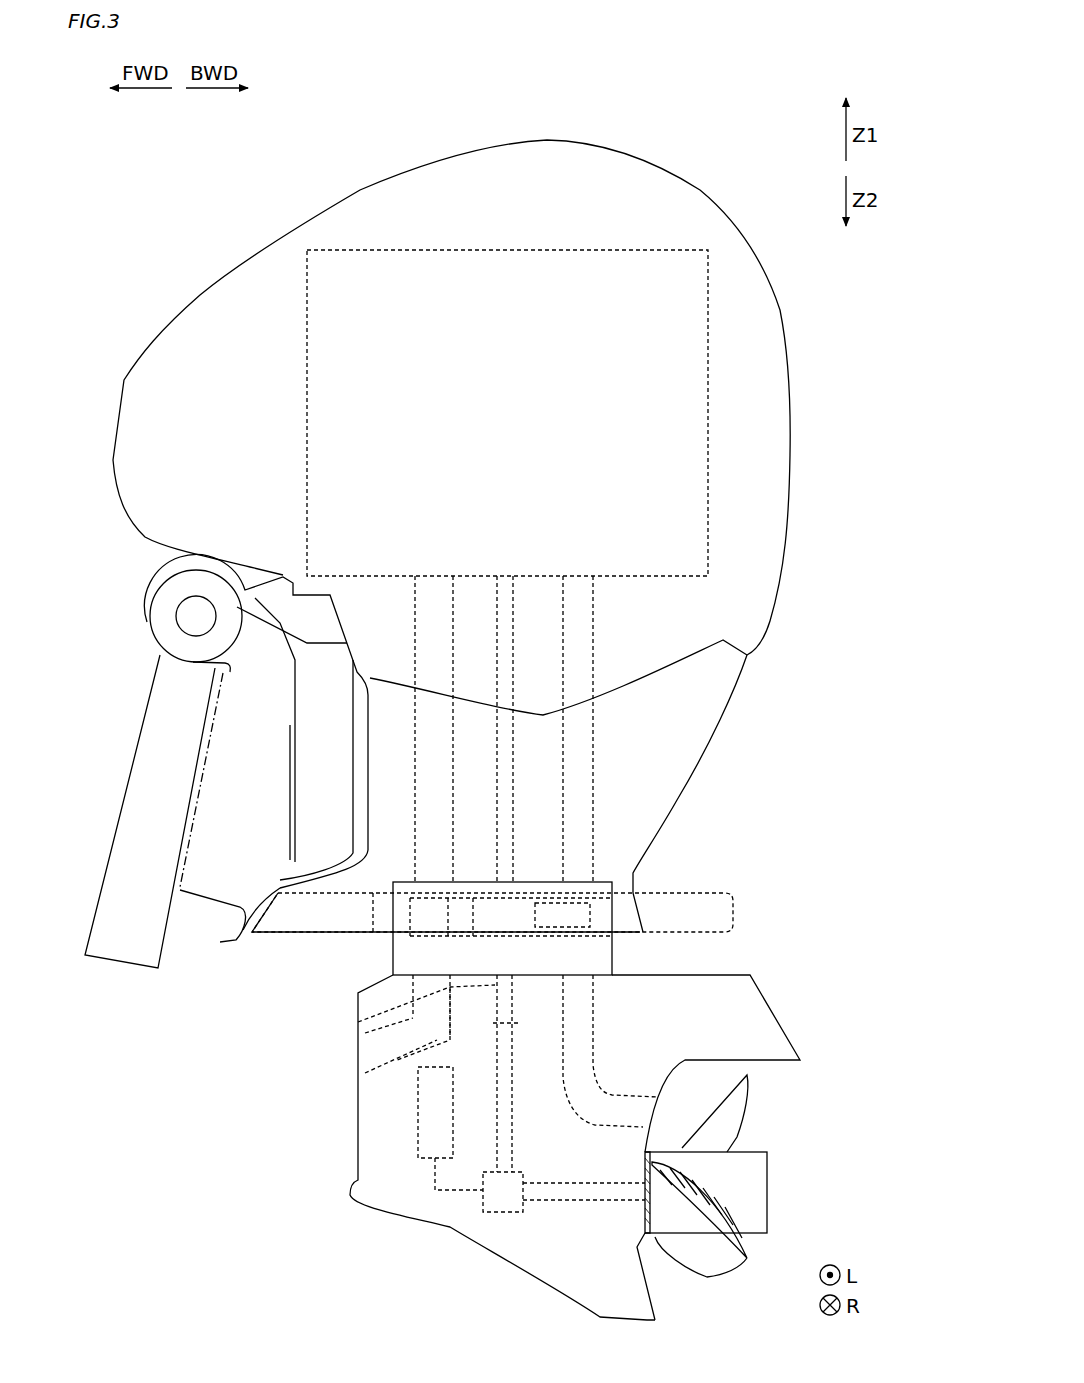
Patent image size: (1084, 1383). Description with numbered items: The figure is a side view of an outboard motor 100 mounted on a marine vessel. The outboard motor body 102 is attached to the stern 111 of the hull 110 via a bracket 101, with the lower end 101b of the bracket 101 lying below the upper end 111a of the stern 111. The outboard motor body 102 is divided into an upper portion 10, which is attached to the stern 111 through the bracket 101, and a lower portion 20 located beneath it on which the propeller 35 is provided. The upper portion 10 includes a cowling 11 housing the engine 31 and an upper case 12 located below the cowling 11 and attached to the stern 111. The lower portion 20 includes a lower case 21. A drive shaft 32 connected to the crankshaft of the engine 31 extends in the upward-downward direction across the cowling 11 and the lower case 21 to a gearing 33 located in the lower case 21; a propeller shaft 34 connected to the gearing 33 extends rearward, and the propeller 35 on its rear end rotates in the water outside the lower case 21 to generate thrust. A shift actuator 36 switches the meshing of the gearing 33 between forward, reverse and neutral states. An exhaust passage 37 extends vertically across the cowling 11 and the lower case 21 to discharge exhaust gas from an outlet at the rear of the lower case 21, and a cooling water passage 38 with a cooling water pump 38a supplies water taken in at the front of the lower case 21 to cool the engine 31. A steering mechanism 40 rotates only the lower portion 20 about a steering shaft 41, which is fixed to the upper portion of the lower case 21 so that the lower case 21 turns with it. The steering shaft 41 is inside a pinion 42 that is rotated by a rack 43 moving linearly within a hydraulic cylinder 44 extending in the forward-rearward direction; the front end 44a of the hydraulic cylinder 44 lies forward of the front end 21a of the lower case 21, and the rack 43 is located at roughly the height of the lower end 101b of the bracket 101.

The outboard motor 100 is at (236, 186).
The upper portion 10 is at (866, 378).
The cowling 11 is at (812, 395).
The upper case 12 is at (735, 728).
The engine 31 is at (307, 285).
The drive shaft 32 is at (513, 802).
The hull 110 is at (132, 694).
The bracket 101 is at (138, 603).
The lower end of the bracket 101b is at (240, 917).
The stern 111 is at (135, 673).
The upper end of the stern 111a is at (150, 641).
The outboard motor body 102 is at (899, 564).
The lower portion 20 is at (808, 1002).
The lower case 21 is at (810, 1040).
The front end of the lower case 21a is at (358, 1197).
The gearing 33 is at (492, 1214).
The propeller shaft 34 is at (560, 1202).
The propeller 35 is at (735, 1110).
The shift actuator 36 is at (417, 1122).
The exhaust passage 37 is at (670, 1083).
The cooling water passage 38 is at (393, 952).
The cooling water pump 38a is at (393, 930).
The steering mechanism 40 is at (744, 933).
The steering shaft 41 is at (358, 1020).
The pinion 42 is at (600, 937).
The rack 43 is at (643, 905).
The hydraulic cylinder 44 is at (740, 905).
The front end of the hydraulic cylinder 44a is at (262, 935).